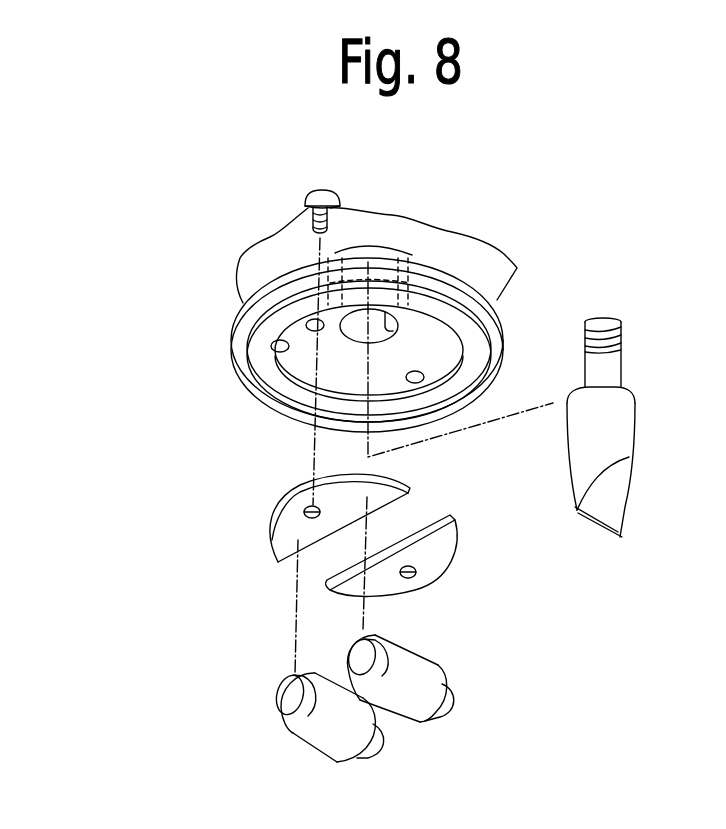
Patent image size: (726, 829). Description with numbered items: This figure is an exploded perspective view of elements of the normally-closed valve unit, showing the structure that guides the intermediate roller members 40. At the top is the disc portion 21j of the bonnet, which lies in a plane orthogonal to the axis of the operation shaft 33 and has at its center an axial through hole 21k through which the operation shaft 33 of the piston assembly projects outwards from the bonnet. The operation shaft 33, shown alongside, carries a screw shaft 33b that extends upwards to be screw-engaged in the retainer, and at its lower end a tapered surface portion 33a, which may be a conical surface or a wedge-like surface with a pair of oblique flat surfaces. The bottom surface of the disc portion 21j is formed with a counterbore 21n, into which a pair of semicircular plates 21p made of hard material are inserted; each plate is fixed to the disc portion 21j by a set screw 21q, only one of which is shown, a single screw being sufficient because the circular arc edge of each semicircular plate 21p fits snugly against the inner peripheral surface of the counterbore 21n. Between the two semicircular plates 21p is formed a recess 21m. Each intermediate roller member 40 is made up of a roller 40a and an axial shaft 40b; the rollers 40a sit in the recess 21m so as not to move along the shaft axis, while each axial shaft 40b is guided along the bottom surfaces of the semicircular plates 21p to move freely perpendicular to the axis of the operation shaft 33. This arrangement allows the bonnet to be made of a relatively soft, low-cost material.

The disc portion 21j is at (495, 337).
The axial through hole 21k is at (386, 325).
The counterbore 21n is at (276, 354).
The set screw 21q is at (303, 207).
The semicircular plate 21p is at (365, 543).
The recess 21m is at (425, 522).
The operation shaft 33 is at (631, 427).
The tapered surface portion 33a is at (614, 490).
The screw shaft 33b is at (620, 342).
The intermediate roller member 40 is at (450, 666).
The roller 40a is at (355, 725).
The axial shaft 40b is at (447, 712).